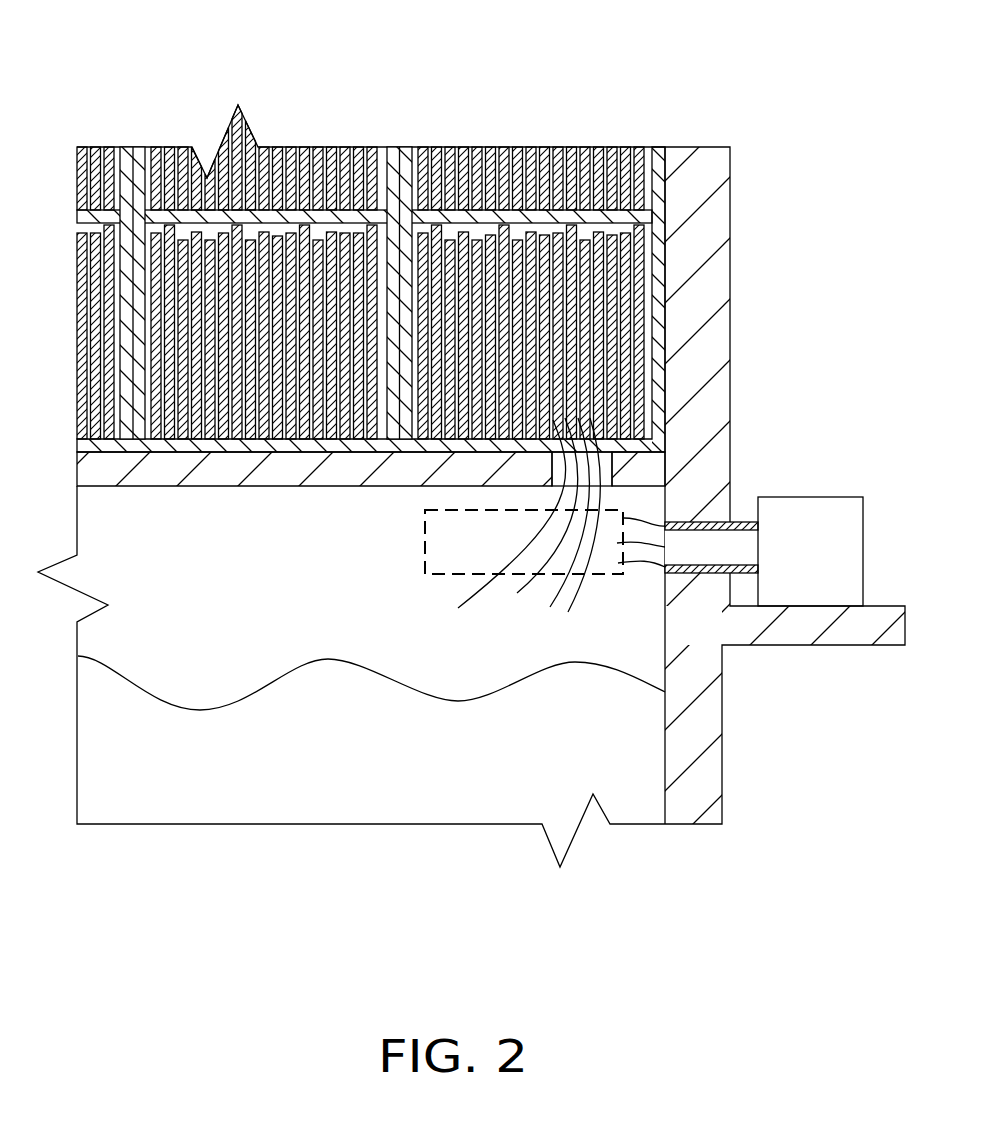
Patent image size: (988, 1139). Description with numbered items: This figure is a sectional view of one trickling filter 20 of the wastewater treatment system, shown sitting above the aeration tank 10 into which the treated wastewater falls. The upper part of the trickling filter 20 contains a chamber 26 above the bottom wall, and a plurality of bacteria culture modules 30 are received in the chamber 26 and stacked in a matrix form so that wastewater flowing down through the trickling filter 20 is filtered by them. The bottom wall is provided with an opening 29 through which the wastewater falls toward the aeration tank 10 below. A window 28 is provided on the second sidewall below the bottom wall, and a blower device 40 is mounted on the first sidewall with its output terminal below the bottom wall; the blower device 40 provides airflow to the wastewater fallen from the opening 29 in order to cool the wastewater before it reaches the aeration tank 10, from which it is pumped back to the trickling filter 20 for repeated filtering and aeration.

The aeration tank 10 is at (642, 785).
The trickling filter 20 is at (467, 421).
The chamber 26 is at (665, 252).
The window 28 is at (590, 578).
The opening 29 is at (605, 467).
The bacteria culture module 30 is at (560, 160).
The blower device 40 is at (827, 517).